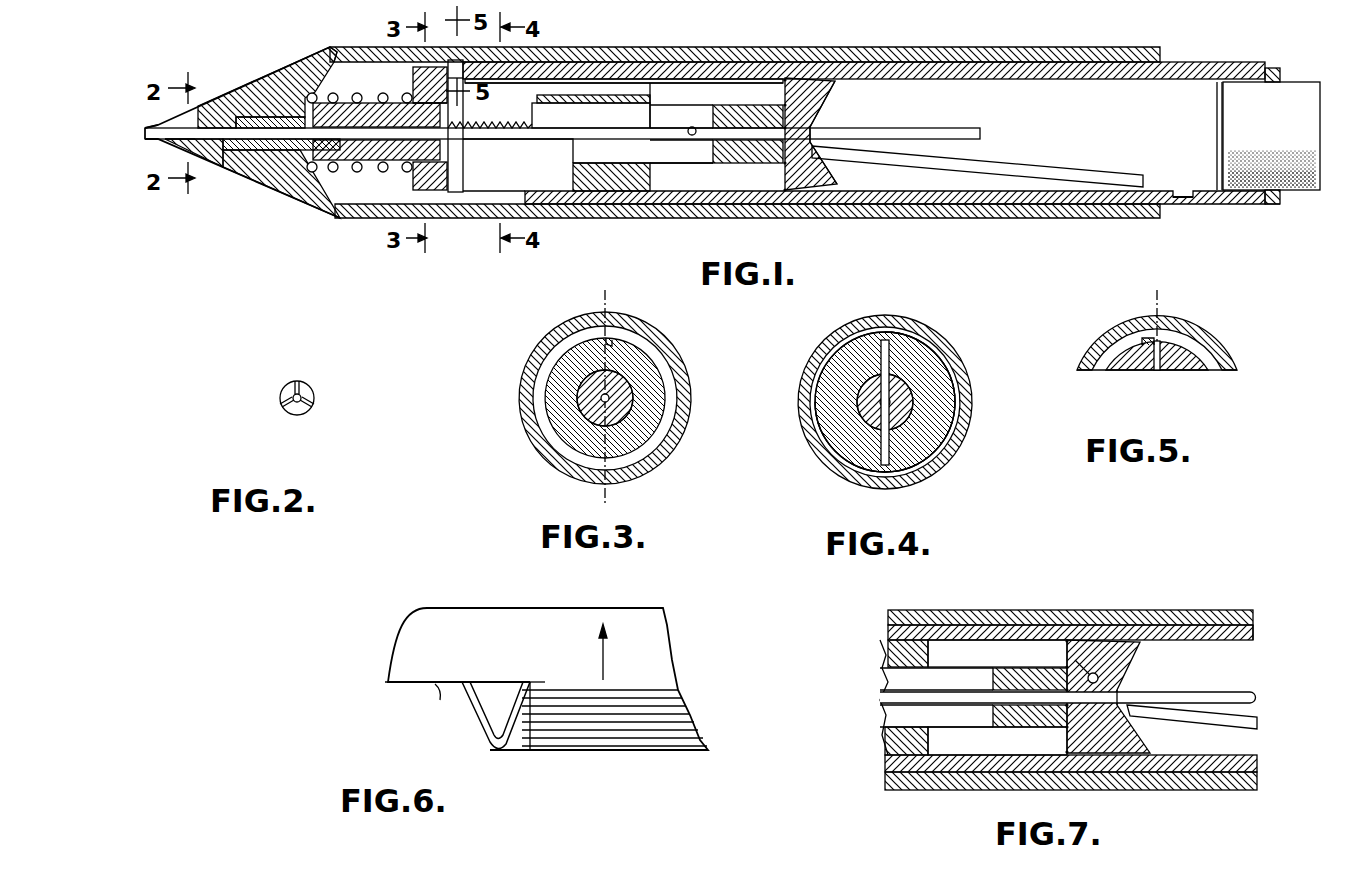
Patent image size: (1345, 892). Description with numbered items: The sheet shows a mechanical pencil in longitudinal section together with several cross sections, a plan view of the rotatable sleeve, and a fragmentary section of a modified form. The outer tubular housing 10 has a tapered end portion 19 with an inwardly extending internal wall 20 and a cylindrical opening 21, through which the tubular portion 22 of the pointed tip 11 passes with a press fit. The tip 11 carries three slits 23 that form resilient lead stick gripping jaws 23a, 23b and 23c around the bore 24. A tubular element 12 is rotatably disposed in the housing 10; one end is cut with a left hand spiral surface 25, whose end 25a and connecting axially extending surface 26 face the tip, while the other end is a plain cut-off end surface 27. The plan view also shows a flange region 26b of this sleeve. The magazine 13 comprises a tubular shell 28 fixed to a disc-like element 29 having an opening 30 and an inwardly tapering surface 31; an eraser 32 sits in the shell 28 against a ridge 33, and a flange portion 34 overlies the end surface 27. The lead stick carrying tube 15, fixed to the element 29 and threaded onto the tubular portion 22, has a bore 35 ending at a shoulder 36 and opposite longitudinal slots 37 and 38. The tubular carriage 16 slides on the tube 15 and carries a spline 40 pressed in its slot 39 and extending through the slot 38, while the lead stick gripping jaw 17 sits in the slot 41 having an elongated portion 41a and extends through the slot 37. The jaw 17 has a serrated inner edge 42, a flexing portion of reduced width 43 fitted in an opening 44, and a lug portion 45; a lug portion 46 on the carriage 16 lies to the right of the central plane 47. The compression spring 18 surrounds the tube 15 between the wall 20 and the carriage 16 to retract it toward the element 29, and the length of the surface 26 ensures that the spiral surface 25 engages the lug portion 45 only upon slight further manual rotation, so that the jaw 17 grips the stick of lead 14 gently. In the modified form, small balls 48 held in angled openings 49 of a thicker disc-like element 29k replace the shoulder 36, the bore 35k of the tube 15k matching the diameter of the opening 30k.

In FIG. 1, the outer tubular housing 10 is at (944, 48).
In FIG. 3, the outer tubular housing 10 is at (680, 360).
In FIG. 4, the outer tubular housing 10 is at (962, 345).
In FIG. 5, the outer tubular housing 10 is at (1215, 345).
In FIG. 7, the outer tubular housing 10 is at (1178, 610).
In FIG. 1, the pointed tip 11 is at (226, 93).
In FIG. 1, the tubular element 12 is at (1195, 62).
In FIG. 4, the tubular element 12 is at (826, 360).
In FIG. 6, the tubular element 12 is at (556, 608).
In FIG. 7, the tubular element 12 is at (1258, 630).
In FIG. 1, the magazine 13 is at (1183, 206).
In FIG. 7, the magazine 13 is at (1253, 641).
In FIG. 1, the stick of lead 14 is at (1018, 163).
In FIG. 7, the stick of lead 14 is at (1207, 728).
In FIG. 1, the lead stick carrying tube 15 is at (735, 164).
In FIG. 3, the lead stick carrying tube 15 is at (600, 398).
In FIG. 4, the lead stick carrying tube 15 is at (905, 392).
In FIG. 7, the lead stick carrying tube (modified) 15k is at (1048, 722).
In FIG. 1, the tubular carriage 16 is at (652, 101).
In FIG. 3, the tubular carriage 16 is at (672, 404).
In FIG. 4, the tubular carriage 16 is at (932, 420).
In FIG. 5, the tubular carriage 16 is at (1187, 372).
In FIG. 1, the lead stick gripping jaw 17 is at (522, 107).
In FIG. 4, the lead stick gripping jaw 17 is at (885, 345).
In FIG. 7, the lead stick gripping jaw 17 is at (1068, 697).
In FIG. 1, the compression spring 18 is at (348, 95).
In FIG. 1, the tapered end portion 19 is at (258, 80).
In FIG. 1, the internal wall 20 is at (330, 48).
In FIG. 1, the cylindrical opening 21 is at (290, 175).
In FIG. 1, the tubular portion 22 is at (262, 150).
In FIG. 1, the slits 23 is at (175, 127).
In FIG. 2, the lead stick gripping jaw 23a is at (281, 388).
In FIG. 1, the lead stick gripping jaw 23b is at (195, 138).
In FIG. 2, the lead stick gripping jaw 23b is at (292, 416).
In FIG. 2, the lead stick gripping jaw 23c is at (312, 390).
In FIG. 1, the bore 24 is at (230, 140).
In FIG. 1, the spiral surface 25 is at (455, 60).
In FIG. 6, the spiral surface 25 is at (522, 750).
In FIG. 6, the end of spiral surface 25a is at (530, 682).
In FIG. 6, the axially extending surface 26 is at (437, 690).
In FIG. 6, the flange 26b is at (385, 682).
In FIG. 1, the cut-off end surface 27 is at (1270, 68).
In FIG. 1, the tubular shell 28 is at (840, 190).
In FIG. 1, the disc-like element 29 is at (812, 78).
In FIG. 7, the disc-like element (modified) 29k is at (1108, 638).
In FIG. 1, the opening 30 is at (818, 130).
In FIG. 7, the opening (modified) 30k is at (1118, 699).
In FIG. 1, the inwardly tapering surface 31 is at (835, 86).
In FIG. 1, the eraser 32 is at (1300, 192).
In FIG. 1, the ridge 33 is at (1217, 95).
In FIG. 1, the flange portion 34 is at (1272, 206).
In FIG. 1, the bore 35 is at (690, 128).
In FIG. 7, the bore (modified) 35k is at (1008, 696).
In FIG. 1, the shoulder 36 is at (784, 166).
In FIG. 1, the longitudinal slot 37 is at (710, 110).
In FIG. 1, the longitudinal slot 38 is at (660, 155).
In FIG. 1, the slot 39 is at (575, 200).
In FIG. 4, the slot 39 is at (925, 447).
In FIG. 1, the spline 40 is at (488, 195).
In FIG. 4, the spline 40 is at (860, 478).
In FIG. 1, the slot 41 is at (560, 79).
In FIG. 4, the slot 41 is at (905, 345).
In FIG. 1, the elongated portion 41a is at (595, 80).
In FIG. 1, the serrated inner edge 42 is at (540, 106).
In FIG. 1, the portion of reduced width 43 is at (612, 95).
In FIG. 1, the opening 44 is at (637, 92).
In FIG. 1, the lug portion 45 is at (425, 100).
In FIG. 5, the lug portion 45 is at (1150, 336).
In FIG. 1, the lug portion 46 is at (413, 75).
In FIG. 3, the lug portion 46 is at (614, 340).
In FIG. 3, the central plane 47 is at (600, 297).
In FIG. 5, the central plane 47 is at (1160, 292).
In FIG. 7, the balls 48 is at (1100, 680).
In FIG. 7, the openings 49 is at (1088, 676).